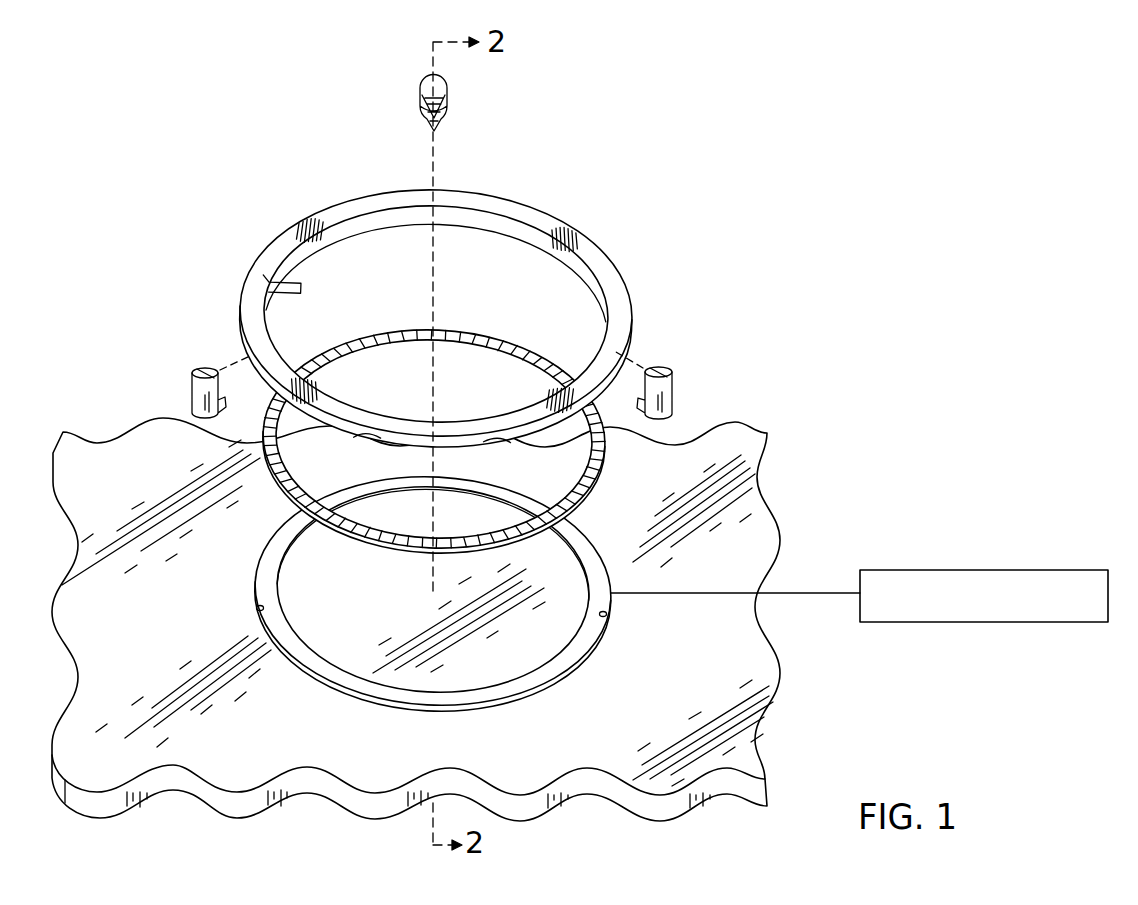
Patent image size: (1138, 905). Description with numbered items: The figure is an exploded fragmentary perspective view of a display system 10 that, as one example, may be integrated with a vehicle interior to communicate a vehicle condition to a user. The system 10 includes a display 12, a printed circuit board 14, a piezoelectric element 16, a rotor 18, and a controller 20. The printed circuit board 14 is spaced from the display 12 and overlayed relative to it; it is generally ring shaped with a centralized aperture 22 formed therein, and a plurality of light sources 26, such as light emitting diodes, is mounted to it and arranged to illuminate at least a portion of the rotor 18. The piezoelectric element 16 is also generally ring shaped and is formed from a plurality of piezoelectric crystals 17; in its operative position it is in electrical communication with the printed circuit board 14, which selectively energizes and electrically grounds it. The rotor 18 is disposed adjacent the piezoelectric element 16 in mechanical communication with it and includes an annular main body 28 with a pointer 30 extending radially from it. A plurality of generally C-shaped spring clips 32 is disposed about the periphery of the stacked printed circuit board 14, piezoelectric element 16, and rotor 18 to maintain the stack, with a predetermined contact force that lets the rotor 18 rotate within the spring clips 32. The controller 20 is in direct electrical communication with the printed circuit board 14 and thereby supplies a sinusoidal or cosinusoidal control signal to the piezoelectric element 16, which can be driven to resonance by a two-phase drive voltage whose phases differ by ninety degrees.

The display system 10 is at (504, 398).
The display 12 is at (766, 777).
The printed circuit board 14 is at (435, 594).
The piezoelectric element 16 is at (463, 433).
The piezoelectric crystals 17 is at (545, 358).
The rotor 18 is at (464, 318).
The controller 20 is at (982, 570).
The centralized aperture 22 is at (282, 609).
The light sources 26 is at (258, 610).
The annular main body 28 is at (436, 313).
The pointer 30 is at (282, 284).
The spring clips 32 is at (447, 77).